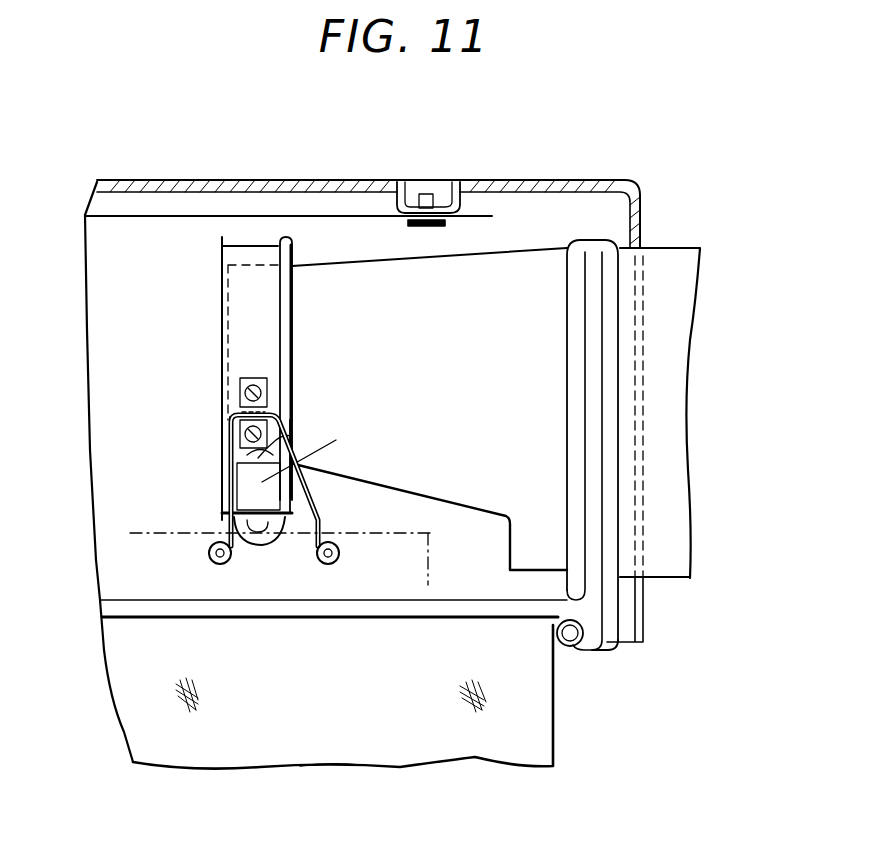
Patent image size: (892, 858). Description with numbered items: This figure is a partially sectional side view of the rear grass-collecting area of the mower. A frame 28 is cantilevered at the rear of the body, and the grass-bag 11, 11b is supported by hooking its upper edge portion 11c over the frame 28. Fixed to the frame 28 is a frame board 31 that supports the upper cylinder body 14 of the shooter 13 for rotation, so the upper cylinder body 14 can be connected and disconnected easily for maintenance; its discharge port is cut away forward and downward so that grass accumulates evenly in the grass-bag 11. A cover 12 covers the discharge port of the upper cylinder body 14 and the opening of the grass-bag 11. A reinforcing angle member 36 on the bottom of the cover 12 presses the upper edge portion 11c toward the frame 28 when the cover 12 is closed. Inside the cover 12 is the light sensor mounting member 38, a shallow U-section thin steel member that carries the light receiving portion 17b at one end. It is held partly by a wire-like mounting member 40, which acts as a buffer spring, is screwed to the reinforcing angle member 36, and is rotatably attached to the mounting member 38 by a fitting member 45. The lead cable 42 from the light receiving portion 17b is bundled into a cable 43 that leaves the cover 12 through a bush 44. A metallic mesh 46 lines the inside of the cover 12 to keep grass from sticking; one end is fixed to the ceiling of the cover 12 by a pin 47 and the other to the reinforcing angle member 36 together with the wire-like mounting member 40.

The grass-bag 11 is at (472, 766).
The grass-bag 11b is at (327, 748).
The upper edge portion 11c is at (155, 609).
The cover 12 is at (543, 184).
The shooter 13 is at (667, 246).
The upper cylinder body 14 is at (466, 330).
The light receiving portion 17b is at (322, 447).
The frame 28 is at (563, 652).
The frame board 31 is at (598, 622).
The reinforcing angle member 36 is at (428, 545).
The light sensor mounting member 38 is at (222, 260).
The wire-like mounting member 40 is at (222, 518).
The lead cable 42 is at (286, 288).
The cable 43 is at (292, 542).
The bush 44 is at (257, 556).
The fitting member 45 is at (262, 378).
The metallic mesh 46 is at (152, 217).
The pin 47 is at (426, 195).